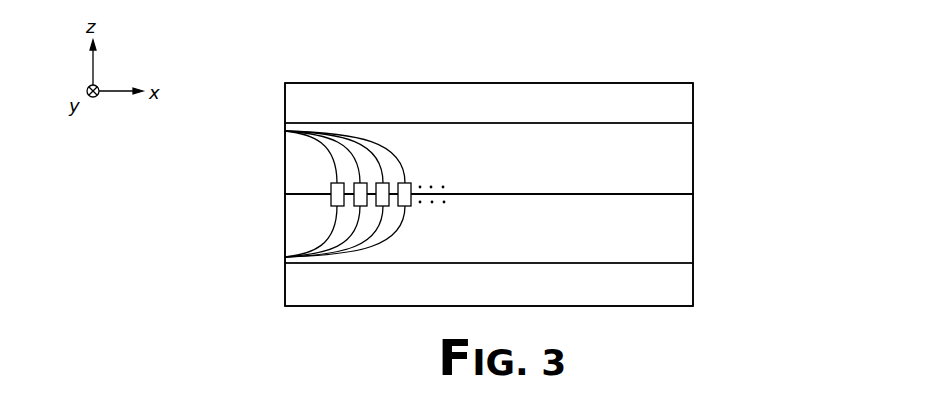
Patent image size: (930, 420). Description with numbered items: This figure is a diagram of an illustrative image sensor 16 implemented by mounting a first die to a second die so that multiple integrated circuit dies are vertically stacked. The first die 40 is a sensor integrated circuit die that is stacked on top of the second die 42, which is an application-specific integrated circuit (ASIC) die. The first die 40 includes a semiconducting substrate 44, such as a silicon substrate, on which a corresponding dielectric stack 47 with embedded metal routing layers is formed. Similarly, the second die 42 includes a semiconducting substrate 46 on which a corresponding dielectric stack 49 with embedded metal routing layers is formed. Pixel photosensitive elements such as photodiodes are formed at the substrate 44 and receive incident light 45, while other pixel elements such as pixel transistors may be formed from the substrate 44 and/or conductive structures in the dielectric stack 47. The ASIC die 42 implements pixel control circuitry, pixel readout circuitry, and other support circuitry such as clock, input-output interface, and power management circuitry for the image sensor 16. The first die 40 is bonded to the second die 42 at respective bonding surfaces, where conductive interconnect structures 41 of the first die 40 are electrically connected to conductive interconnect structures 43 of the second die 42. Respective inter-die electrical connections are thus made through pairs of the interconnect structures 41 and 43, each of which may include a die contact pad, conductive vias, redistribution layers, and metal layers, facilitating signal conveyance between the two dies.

The image sensor 16 is at (682, 42).
The first die 40 is at (693, 115).
The second die 42 is at (693, 214).
The semiconducting substrate 44 is at (652, 116).
The dielectric stack 47 is at (652, 173).
The dielectric stack 49 is at (652, 248).
The semiconducting substrate 46 is at (652, 301).
The conductive interconnect structures 41 is at (285, 131).
The conductive interconnect structures 43 is at (285, 257).
The incident light 45 is at (442, 20).